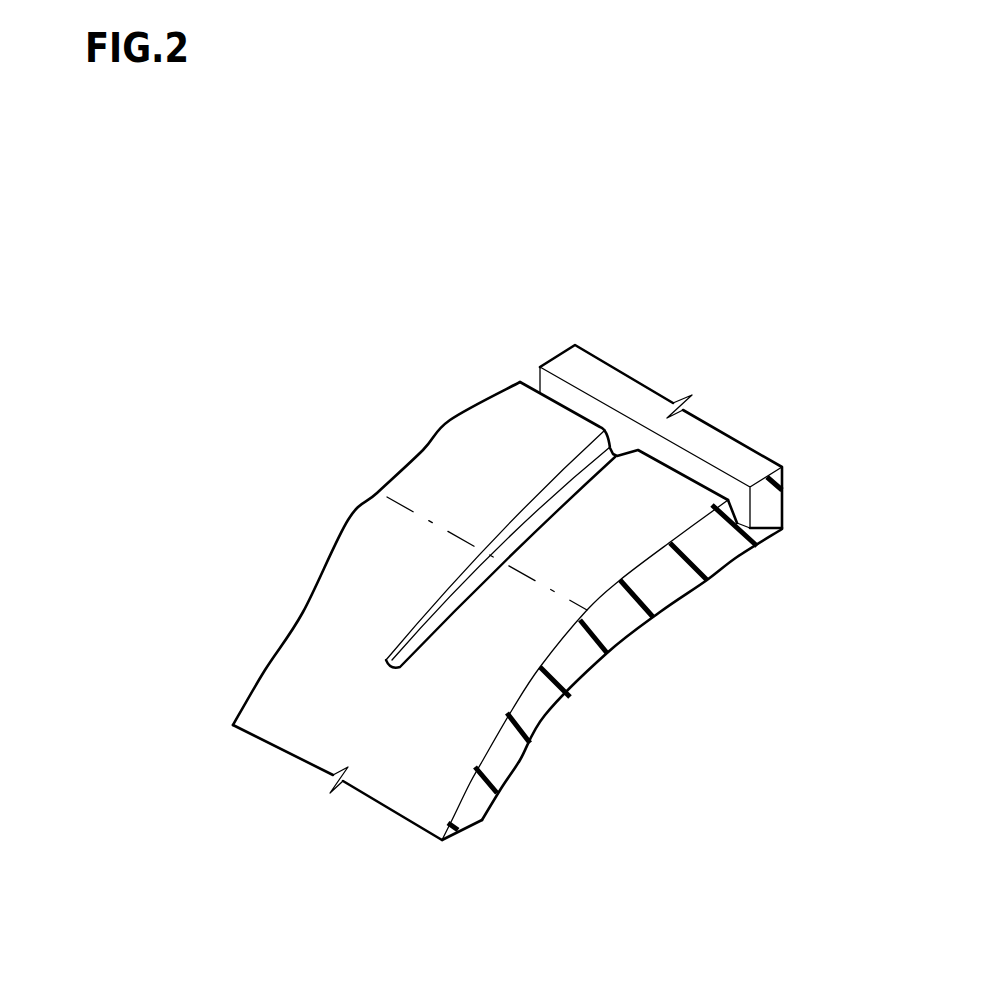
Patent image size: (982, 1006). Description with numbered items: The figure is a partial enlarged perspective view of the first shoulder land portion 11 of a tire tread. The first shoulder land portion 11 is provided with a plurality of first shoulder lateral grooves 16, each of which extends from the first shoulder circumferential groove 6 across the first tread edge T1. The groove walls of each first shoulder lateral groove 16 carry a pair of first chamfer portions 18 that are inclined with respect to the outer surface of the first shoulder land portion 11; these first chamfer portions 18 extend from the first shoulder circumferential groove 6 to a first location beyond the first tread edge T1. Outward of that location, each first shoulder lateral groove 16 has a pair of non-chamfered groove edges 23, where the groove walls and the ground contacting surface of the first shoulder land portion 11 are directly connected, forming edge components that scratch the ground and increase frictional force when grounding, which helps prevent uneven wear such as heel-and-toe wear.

The first shoulder land portion 11 is at (449, 420).
The first shoulder circumferential groove 6 is at (576, 400).
The first shoulder lateral groove 16 is at (566, 499).
The first chamfer portion 18 is at (520, 513).
The non-chamfered groove edge 23 is at (420, 608).
The first tread edge T1 is at (387, 497).